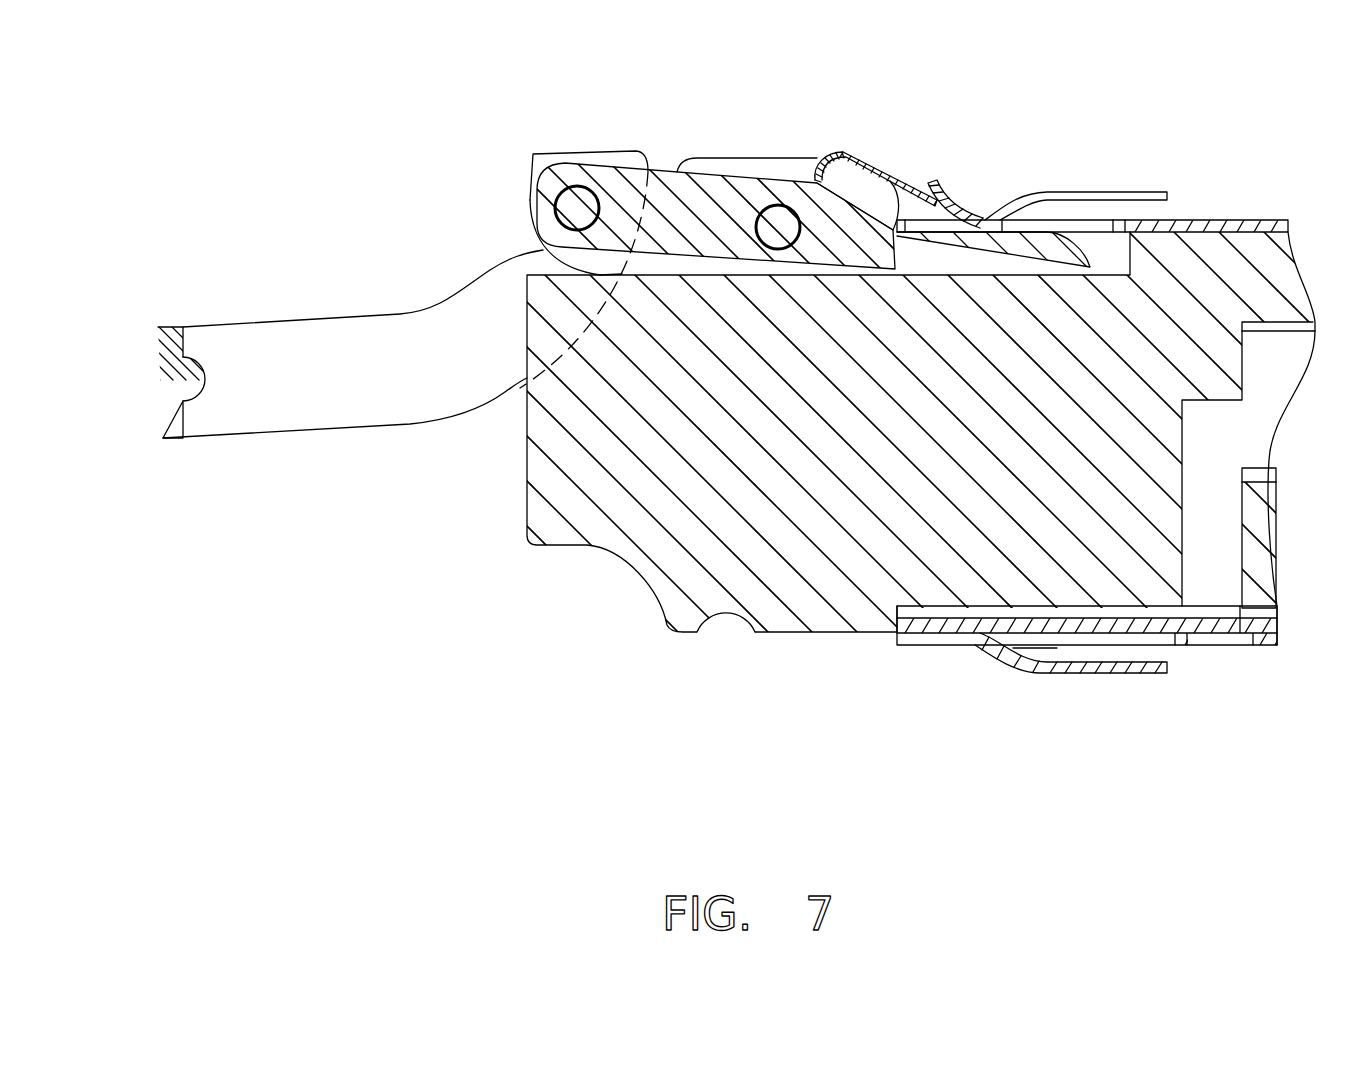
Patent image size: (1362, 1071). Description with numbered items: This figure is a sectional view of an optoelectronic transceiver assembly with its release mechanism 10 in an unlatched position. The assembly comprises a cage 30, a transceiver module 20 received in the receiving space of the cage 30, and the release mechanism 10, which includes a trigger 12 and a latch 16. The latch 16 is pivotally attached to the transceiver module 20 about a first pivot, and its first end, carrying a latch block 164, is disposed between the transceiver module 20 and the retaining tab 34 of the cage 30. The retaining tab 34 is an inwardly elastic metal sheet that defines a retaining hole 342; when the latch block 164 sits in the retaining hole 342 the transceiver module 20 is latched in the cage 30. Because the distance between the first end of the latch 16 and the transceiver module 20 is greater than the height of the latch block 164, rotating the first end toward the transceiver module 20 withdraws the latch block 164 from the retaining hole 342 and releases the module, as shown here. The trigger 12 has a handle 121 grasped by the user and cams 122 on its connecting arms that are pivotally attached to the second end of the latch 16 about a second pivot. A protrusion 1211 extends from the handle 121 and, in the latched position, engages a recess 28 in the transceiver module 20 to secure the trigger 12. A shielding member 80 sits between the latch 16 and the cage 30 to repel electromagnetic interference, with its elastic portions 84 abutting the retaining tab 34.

The release mechanism 10 is at (704, 212).
The trigger 12 is at (519, 241).
The latch 16 is at (635, 92).
The cam 122 is at (578, 263).
The shielding member 80 is at (859, 148).
The elastic portion 84 is at (890, 168).
The retaining tab 34 is at (967, 213).
The latch block 164 is at (1043, 247).
The retaining hole 342 is at (1093, 223).
The cage 30 is at (1255, 222).
The transceiver module 20 is at (737, 481).
The recess 28 is at (727, 623).
The handle 121 is at (312, 344).
The protrusion 1211 is at (200, 382).